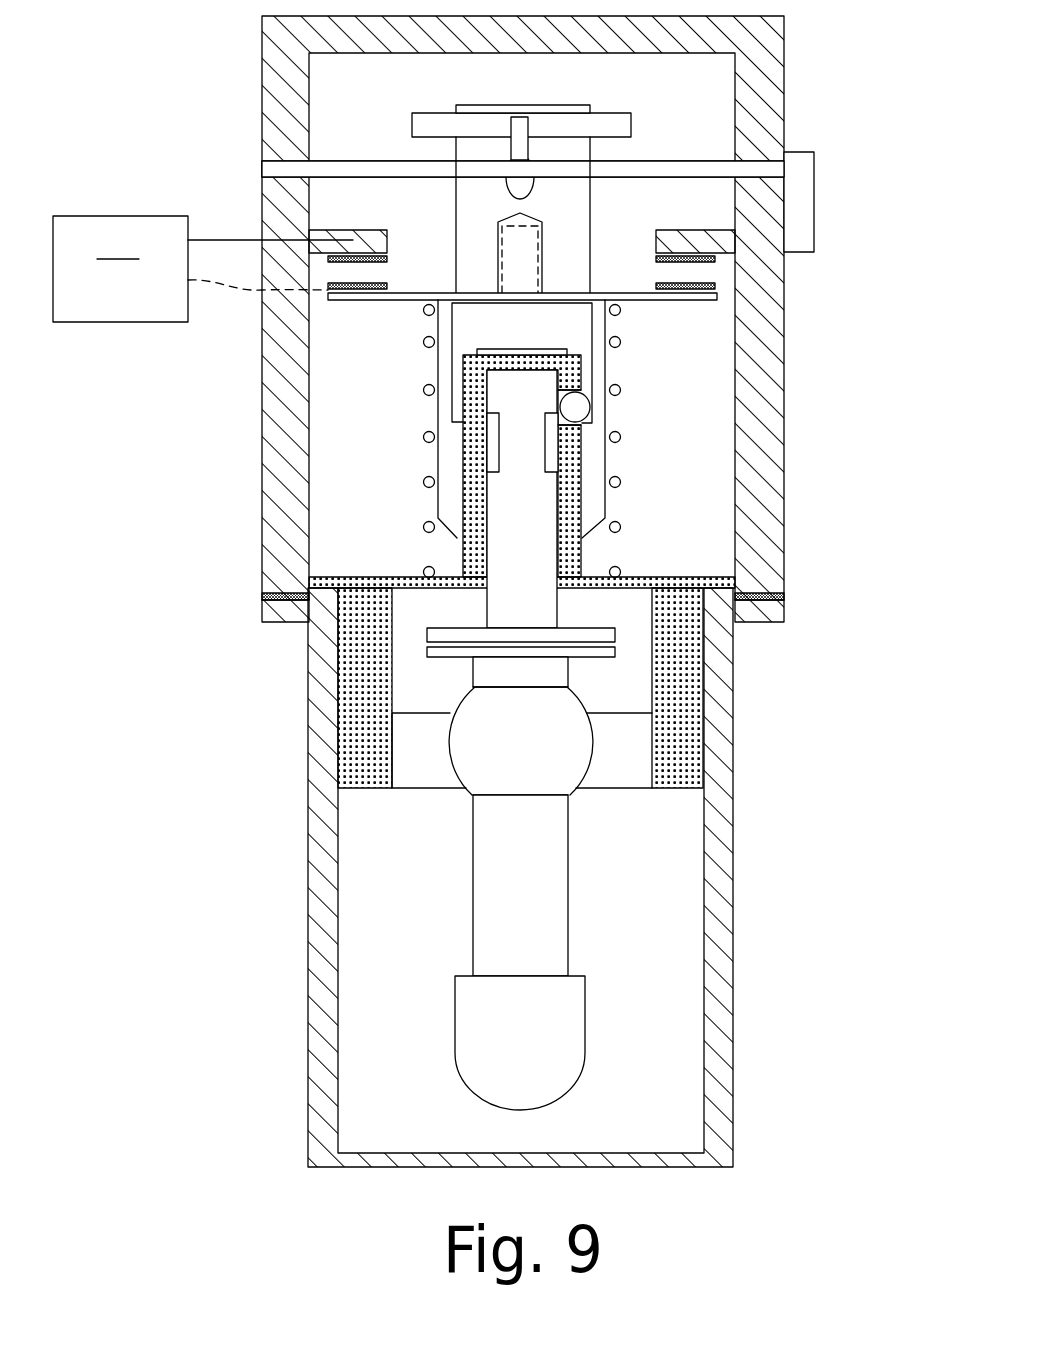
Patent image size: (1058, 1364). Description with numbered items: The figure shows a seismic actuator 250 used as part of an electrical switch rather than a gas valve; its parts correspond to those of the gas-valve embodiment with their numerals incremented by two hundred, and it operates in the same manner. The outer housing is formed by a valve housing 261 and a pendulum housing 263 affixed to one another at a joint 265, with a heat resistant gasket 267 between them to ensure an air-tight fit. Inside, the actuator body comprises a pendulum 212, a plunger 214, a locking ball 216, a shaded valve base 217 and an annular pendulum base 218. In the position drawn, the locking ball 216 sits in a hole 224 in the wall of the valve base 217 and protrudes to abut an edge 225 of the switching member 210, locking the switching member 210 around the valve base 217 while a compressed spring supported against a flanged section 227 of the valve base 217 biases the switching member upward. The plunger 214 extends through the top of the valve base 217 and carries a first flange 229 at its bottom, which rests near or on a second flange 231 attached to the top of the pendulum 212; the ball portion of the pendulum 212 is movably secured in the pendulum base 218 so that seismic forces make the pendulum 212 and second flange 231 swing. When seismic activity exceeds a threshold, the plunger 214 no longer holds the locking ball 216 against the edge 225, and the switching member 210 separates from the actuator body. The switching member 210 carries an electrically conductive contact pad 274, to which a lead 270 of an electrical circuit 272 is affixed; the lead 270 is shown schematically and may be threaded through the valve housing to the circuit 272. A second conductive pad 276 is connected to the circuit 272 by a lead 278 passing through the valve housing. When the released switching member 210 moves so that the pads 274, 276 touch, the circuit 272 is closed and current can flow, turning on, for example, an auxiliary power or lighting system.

The switching member 210 is at (655, 307).
The pendulum 212 is at (555, 893).
The plunger 214 is at (500, 533).
The locking ball 216 is at (578, 403).
The valve base 217 is at (687, 675).
The pendulum base 218 is at (623, 767).
The hole 224 is at (573, 432).
The edge 225 is at (582, 418).
The flanged section 227 is at (347, 577).
The first flange 229 is at (457, 625).
The second flange 231 is at (457, 658).
The seismic actuator 250 is at (797, 558).
The valve housing 261 is at (262, 438).
The pendulum housing 263 is at (307, 842).
The joint 265 is at (262, 596).
The heat resistant gasket 267 is at (262, 601).
The lead 270 is at (235, 287).
The electrical circuit 272 is at (120, 269).
The electrically conductive contact pad 274 is at (358, 297).
The second conductive pad 276 is at (377, 250).
The lead 278 is at (233, 240).